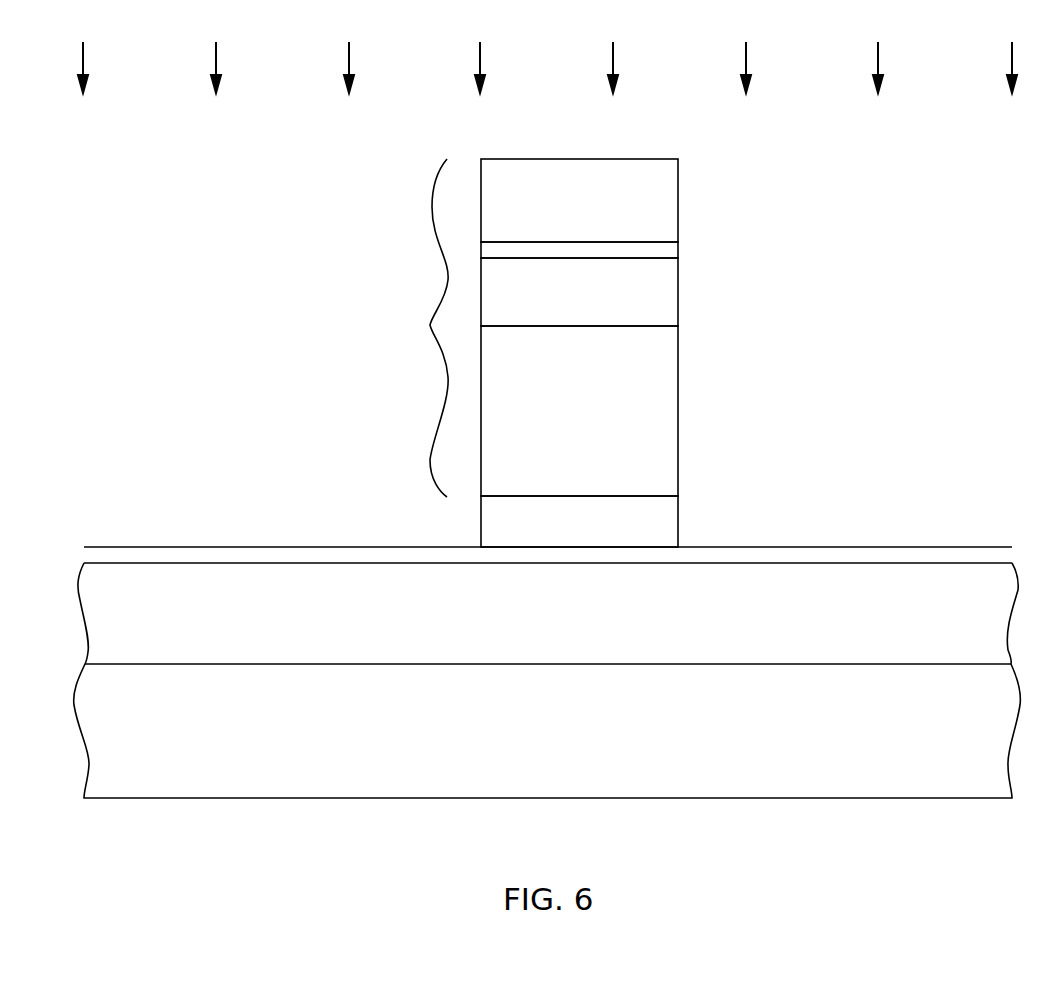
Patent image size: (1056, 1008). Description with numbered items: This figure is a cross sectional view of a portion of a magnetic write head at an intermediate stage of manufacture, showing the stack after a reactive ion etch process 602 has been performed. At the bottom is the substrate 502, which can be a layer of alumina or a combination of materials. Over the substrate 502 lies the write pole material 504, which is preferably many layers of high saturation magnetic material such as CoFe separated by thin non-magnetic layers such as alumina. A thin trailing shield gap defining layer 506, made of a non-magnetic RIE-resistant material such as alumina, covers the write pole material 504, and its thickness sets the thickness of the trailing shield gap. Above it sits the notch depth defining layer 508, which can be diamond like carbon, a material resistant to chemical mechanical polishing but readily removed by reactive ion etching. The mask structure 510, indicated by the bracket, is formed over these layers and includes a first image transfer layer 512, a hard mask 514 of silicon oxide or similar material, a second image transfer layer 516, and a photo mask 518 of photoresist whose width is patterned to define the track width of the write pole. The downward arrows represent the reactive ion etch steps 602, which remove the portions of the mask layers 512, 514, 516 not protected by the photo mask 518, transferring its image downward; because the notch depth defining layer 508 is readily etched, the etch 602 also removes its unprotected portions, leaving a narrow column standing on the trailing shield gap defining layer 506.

The reactive ion etch steps 602 is at (482, 61).
The mask structure 510 is at (430, 208).
The photo mask 518 is at (597, 200).
The second image transfer layer 516 is at (672, 250).
The hard mask 514 is at (597, 292).
The first image transfer layer 512 is at (598, 408).
The notch depth defining layer 508 is at (598, 520).
The trailing shield gap defining layer 506 is at (862, 553).
The write pole material 504 is at (597, 612).
The substrate 502 is at (613, 729).